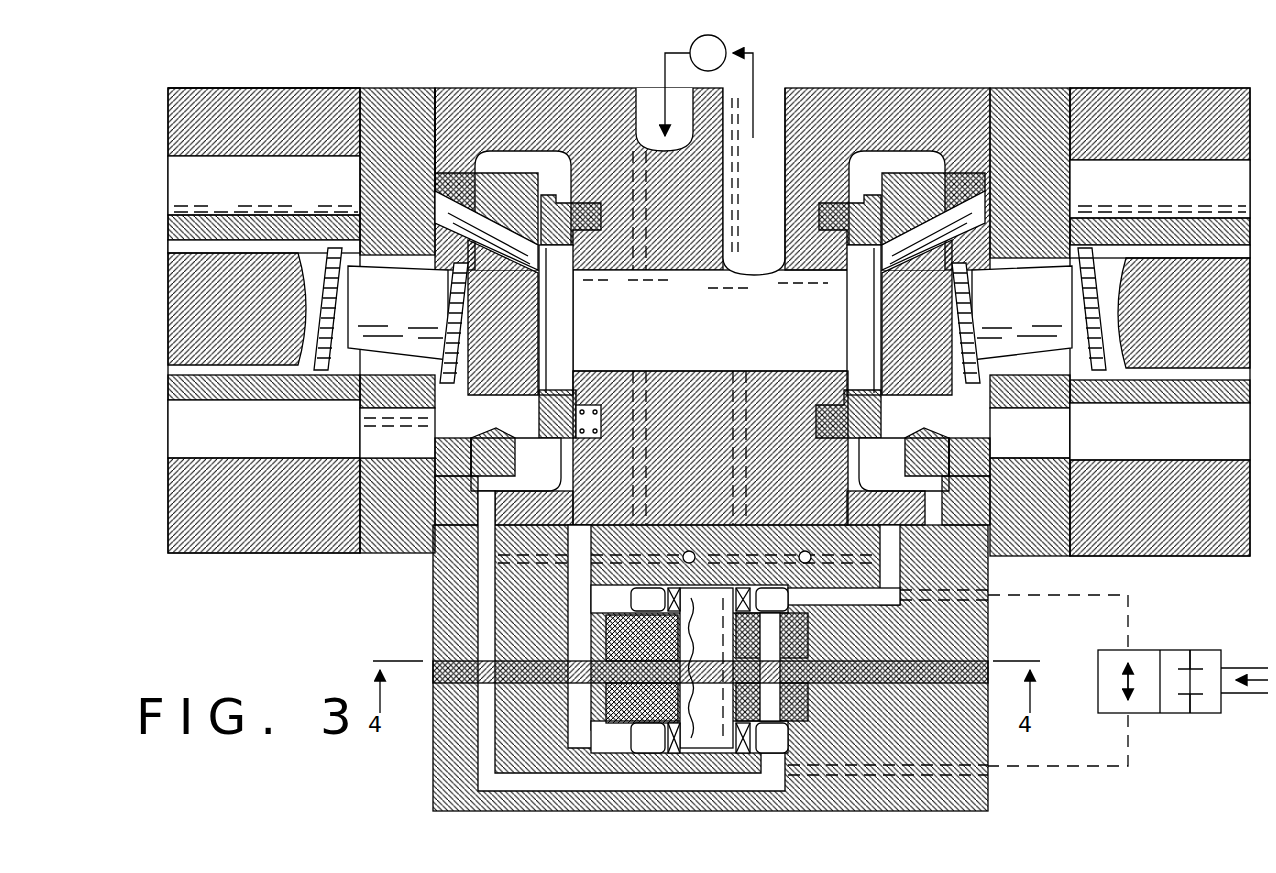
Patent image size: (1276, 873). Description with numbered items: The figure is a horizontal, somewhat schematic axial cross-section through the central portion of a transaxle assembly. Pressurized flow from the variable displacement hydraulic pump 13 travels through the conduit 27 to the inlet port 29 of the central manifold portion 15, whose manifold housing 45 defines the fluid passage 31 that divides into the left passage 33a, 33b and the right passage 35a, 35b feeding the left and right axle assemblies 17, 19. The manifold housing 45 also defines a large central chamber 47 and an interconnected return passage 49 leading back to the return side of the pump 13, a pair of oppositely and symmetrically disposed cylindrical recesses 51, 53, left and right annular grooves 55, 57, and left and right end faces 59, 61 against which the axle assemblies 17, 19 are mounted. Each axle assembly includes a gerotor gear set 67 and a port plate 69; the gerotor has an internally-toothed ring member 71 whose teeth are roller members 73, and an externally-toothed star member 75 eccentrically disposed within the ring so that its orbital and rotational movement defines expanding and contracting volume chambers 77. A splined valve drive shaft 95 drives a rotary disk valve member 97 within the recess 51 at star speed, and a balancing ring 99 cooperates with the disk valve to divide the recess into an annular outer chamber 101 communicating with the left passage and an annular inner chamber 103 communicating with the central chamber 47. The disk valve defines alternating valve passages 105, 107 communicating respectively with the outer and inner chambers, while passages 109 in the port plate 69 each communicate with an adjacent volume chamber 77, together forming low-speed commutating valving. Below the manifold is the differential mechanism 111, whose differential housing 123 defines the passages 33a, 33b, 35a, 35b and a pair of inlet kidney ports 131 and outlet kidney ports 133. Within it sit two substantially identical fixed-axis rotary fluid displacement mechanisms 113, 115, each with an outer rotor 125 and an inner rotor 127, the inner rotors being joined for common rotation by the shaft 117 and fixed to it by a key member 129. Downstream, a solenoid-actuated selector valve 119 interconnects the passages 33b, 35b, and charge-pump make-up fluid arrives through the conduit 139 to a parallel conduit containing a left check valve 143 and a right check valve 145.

The variable displacement hydraulic pump 13 is at (680, 41).
The central manifold portion 15 is at (838, 78).
The left axle assembly 17 is at (237, 550).
The right axle assembly 19 is at (1220, 552).
The conduit 27 is at (655, 56).
The inlet port 29 is at (620, 102).
The fluid passage 31 is at (640, 222).
The left passage 33a is at (572, 725).
The left passage 33b is at (478, 571).
The right passage 35a is at (572, 588).
The right passage 35b is at (880, 530).
The manifold housing 45 is at (508, 95).
The central chamber 47 is at (710, 320).
The return passage 49 is at (770, 150).
The cylindrical recess 51 is at (495, 143).
The cylindrical recess 53 is at (900, 143).
The left annular groove 55 is at (590, 195).
The right annular groove 57 is at (820, 195).
The left end face 59 is at (430, 95).
The right end face 61 is at (1010, 100).
The gerotor gear set 67 is at (215, 78).
The port plate 69 is at (385, 95).
The internally-toothed ring member 71 is at (260, 90).
The roller members 73 is at (258, 175).
The externally-toothed star member 75 is at (208, 238).
The volume chambers 77 is at (264, 429).
The valve drive shaft 95 is at (391, 315).
The rotary disk valve member 97 is at (548, 290).
The balancing ring 99 is at (540, 445).
The annular outer chamber 101 is at (500, 480).
The annular inner chamber 103 is at (550, 333).
The valve passages 105 is at (432, 455).
The valve passages 107 is at (500, 225).
The passages 109 is at (365, 428).
The differential mechanism 111 is at (405, 748).
The rotary fluid displacement mechanism 113 is at (800, 695).
The rotary fluid displacement mechanism 115 is at (800, 623).
The shaft 117 is at (735, 591).
The selector valve 119 is at (1165, 705).
The differential housing 123 is at (425, 614).
The outer rotor 125 is at (598, 688).
The inner rotor 127 is at (600, 622).
The key member 129 is at (685, 672).
The inlet kidney ports 131 is at (640, 580).
The outlet kidney ports 133 is at (768, 580).
The conduit 139 is at (730, 430).
The left check valve 143 is at (684, 555).
The right check valve 145 is at (800, 556).